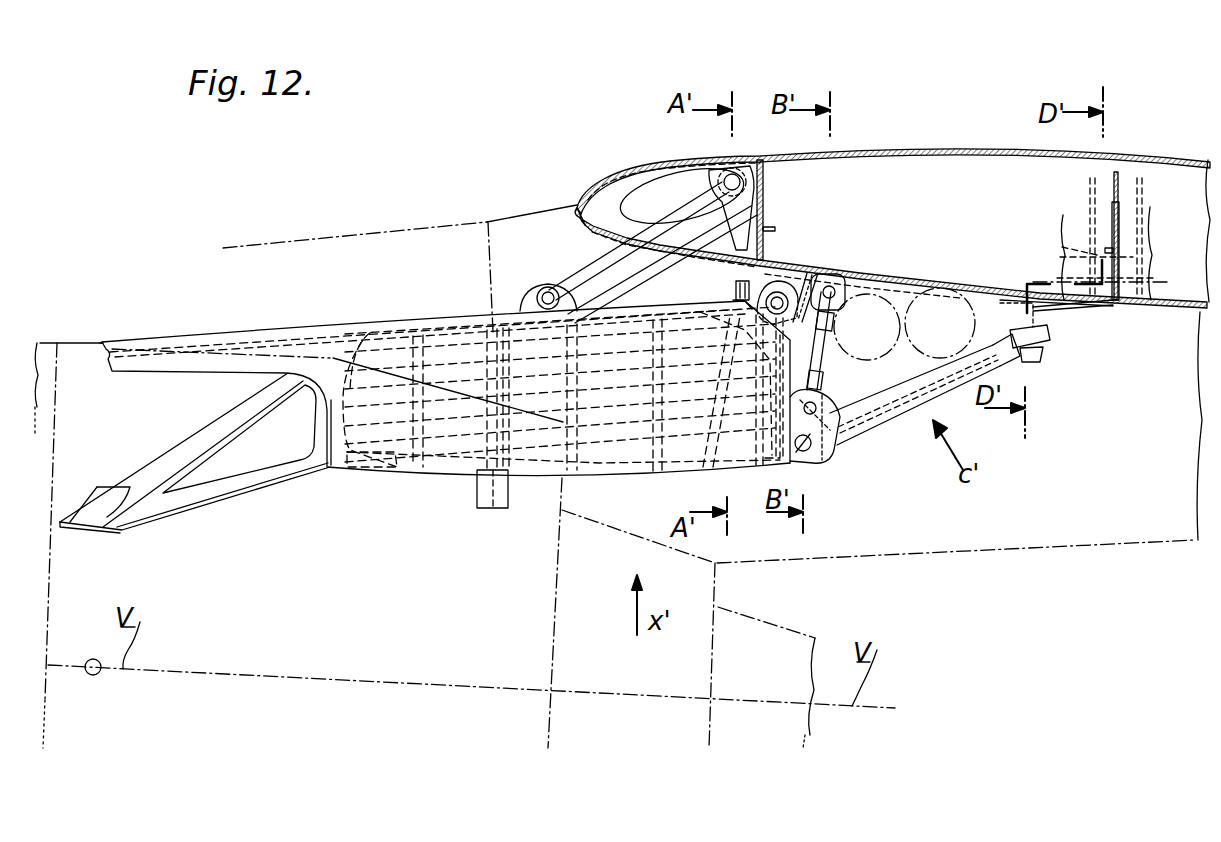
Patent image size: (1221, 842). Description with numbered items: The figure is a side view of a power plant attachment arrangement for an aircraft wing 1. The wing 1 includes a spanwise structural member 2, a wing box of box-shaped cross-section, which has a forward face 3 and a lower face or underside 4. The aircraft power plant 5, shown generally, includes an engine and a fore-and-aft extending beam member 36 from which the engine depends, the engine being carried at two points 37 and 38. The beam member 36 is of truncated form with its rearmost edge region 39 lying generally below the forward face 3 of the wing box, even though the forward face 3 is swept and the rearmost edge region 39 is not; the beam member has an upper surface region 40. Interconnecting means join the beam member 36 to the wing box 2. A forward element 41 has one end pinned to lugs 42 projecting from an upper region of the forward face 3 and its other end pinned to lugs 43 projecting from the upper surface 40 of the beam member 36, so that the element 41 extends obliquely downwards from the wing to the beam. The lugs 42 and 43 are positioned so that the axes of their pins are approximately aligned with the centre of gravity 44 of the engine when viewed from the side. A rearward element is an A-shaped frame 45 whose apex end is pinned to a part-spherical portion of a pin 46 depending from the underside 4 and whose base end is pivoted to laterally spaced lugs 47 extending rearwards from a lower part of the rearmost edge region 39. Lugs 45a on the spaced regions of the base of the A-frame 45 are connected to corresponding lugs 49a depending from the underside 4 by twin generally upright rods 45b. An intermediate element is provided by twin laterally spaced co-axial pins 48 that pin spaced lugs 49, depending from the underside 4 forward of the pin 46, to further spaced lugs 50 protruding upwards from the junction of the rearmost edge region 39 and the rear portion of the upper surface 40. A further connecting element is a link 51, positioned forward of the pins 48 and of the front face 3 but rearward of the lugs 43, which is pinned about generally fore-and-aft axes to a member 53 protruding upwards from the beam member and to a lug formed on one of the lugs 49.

The aircraft wing 1 is at (587, 195).
The spanwise structural member 2 is at (927, 158).
The forward face 3 is at (662, 264).
The underside 4 is at (953, 290).
The aircraft power plant 5 is at (85, 342).
The beam member 36 is at (377, 470).
The engine carrying point 37 is at (73, 522).
The engine carrying point 38 is at (490, 512).
The rearmost edge region 39 is at (810, 450).
The upper surface region 40 is at (310, 328).
The forward element 41 is at (578, 270).
The lugs 42 is at (735, 172).
The lugs 43 is at (500, 300).
The centre of gravity 44 is at (98, 675).
The A-shaped frame 45 is at (913, 410).
The lugs 45a is at (797, 460).
The upright rods 45b is at (820, 360).
The pin 46 is at (1043, 347).
The lugs 47 is at (800, 464).
The co-axial pins 48 is at (812, 275).
The lugs 49 is at (825, 274).
The lugs 49a is at (855, 290).
The lugs 50 is at (777, 283).
The link 51 is at (733, 297).
The member 53 is at (735, 282).